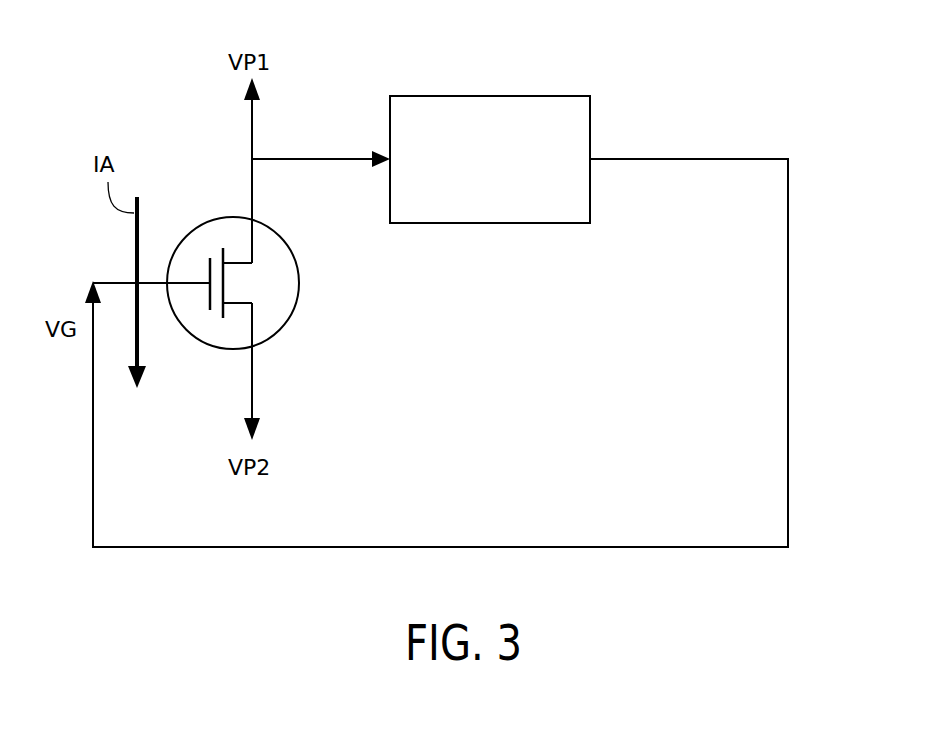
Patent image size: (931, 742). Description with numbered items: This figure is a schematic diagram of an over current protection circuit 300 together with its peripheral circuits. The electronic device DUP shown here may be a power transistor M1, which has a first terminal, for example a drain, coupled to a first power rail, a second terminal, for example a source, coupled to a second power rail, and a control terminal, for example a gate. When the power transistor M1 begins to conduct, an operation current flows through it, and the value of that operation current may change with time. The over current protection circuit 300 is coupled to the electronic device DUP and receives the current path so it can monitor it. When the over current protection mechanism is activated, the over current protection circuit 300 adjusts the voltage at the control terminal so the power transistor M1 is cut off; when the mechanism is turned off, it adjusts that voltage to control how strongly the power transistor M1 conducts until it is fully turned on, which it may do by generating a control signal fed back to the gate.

The over current protection circuit 300 is at (540, 96).
The power transistor M1 is at (271, 287).
The electronic device DUP is at (278, 330).